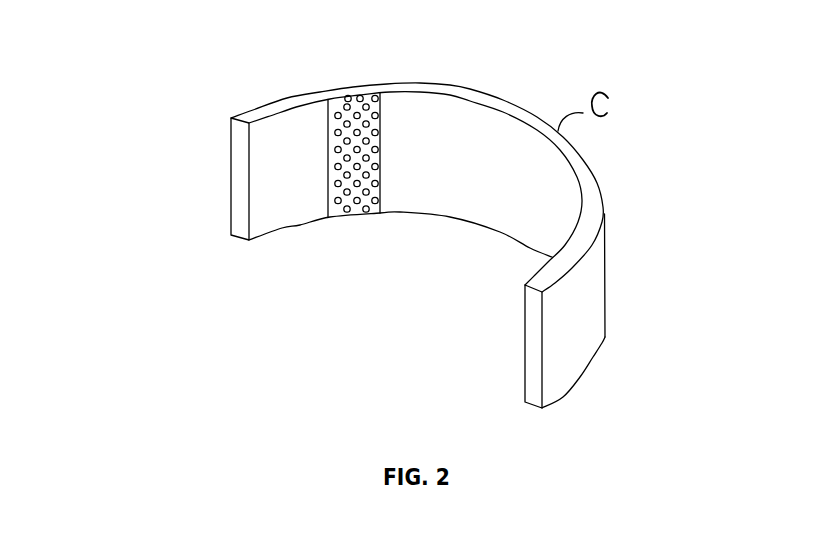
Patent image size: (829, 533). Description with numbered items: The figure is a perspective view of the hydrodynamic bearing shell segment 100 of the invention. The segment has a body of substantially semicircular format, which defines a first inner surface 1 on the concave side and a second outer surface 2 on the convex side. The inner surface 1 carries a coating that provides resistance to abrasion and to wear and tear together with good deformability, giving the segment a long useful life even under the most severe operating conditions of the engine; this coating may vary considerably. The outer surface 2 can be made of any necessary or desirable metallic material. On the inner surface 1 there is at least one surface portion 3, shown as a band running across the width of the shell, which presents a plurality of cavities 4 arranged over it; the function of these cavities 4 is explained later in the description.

The hydrodynamic bearing shell segment 100 is at (155, 58).
The inner surface 1 is at (482, 207).
The outer surface 2 is at (578, 337).
The surface portion 3 is at (347, 105).
The cavities 4 is at (340, 217).